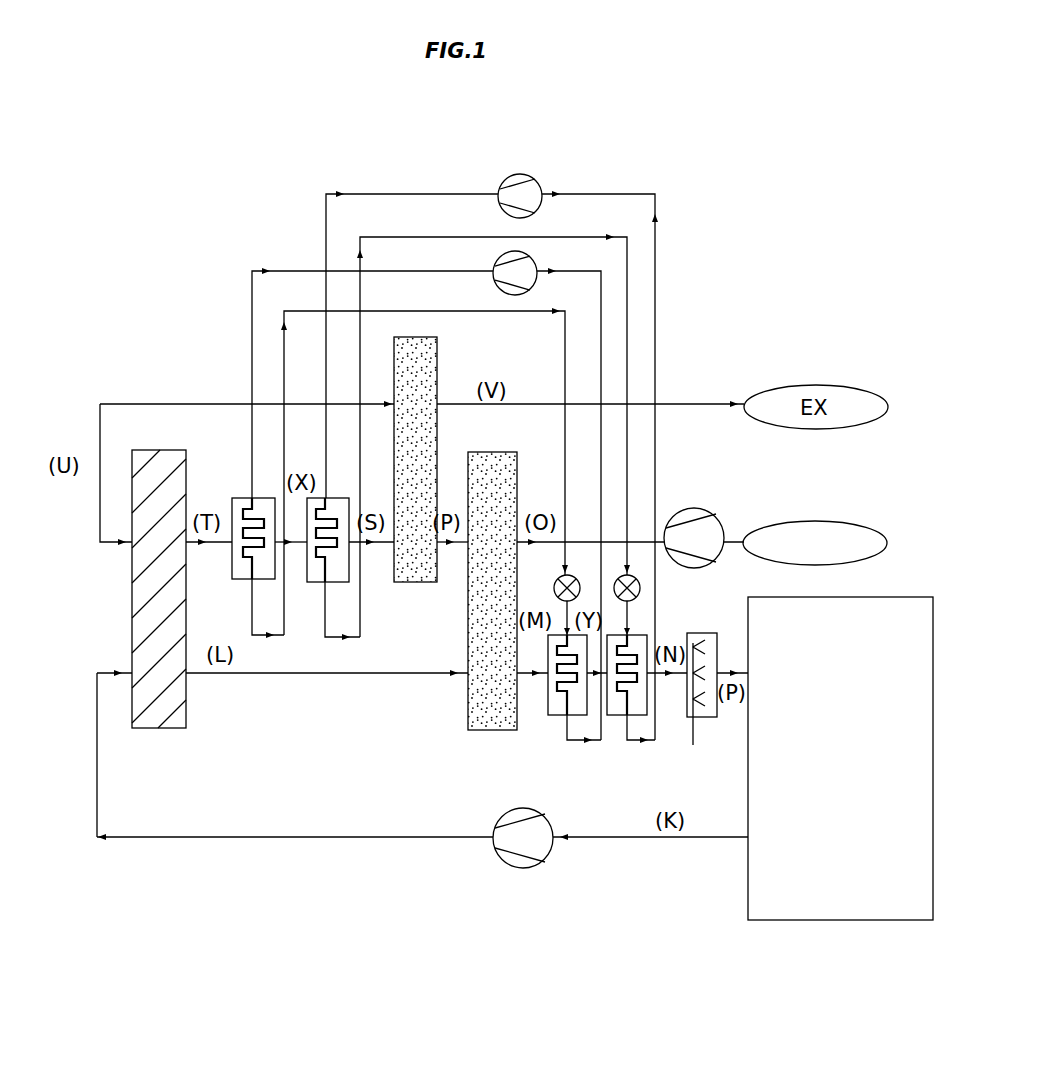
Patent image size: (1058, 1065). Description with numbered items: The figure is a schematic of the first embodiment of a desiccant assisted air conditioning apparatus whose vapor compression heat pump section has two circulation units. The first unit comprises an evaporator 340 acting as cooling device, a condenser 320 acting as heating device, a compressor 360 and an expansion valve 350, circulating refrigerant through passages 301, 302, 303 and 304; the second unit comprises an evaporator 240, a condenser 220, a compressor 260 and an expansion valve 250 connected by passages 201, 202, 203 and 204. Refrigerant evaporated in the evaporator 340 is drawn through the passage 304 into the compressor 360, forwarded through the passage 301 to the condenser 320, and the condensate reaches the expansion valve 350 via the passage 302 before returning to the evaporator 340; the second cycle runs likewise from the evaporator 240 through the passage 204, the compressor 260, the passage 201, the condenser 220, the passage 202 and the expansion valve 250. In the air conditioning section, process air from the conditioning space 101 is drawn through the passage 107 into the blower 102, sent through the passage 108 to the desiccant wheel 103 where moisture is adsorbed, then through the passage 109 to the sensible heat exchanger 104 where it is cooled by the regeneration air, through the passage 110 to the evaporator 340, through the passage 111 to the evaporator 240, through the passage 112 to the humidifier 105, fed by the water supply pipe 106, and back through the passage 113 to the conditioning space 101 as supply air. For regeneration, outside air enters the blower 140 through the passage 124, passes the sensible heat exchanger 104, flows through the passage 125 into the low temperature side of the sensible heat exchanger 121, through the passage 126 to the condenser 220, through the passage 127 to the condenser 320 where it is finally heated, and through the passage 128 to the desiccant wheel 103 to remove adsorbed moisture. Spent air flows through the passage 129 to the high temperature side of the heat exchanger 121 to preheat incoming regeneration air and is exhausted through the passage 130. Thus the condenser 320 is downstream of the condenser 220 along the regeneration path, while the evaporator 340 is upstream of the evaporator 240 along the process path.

The conditioning space 101 is at (905, 597).
The blower 102 is at (503, 818).
The desiccant wheel 103 is at (132, 625).
The sensible heat exchanger 104 is at (468, 722).
The humidifier 105 is at (703, 633).
The water supply pipe 106 is at (696, 740).
The air passage 107 is at (622, 840).
The air passage 108 is at (272, 840).
The air passage 109 is at (330, 676).
The air passage 110 is at (540, 690).
The air passage 111 is at (603, 735).
The air passage 112 is at (660, 690).
The air passage 113 is at (728, 668).
The sensible heat exchanger 121 is at (437, 348).
The air passage 124 is at (745, 525).
The air passage 125 is at (448, 548).
The air passage 126 is at (375, 548).
The air passage 127 is at (290, 548).
The air passage 128 is at (210, 548).
The air passage 129 is at (100, 542).
The air passage 130 is at (540, 404).
The blower 140 is at (704, 508).
The refrigerant passage 201 is at (326, 206).
The refrigerant passage 202 is at (352, 640).
The refrigerant passage 203 is at (628, 612).
The refrigerant passage 204 is at (656, 236).
The condenser 220 is at (325, 498).
The evaporator 240 is at (617, 720).
The expansion valve 250 is at (632, 600).
The compressor 260 is at (506, 178).
The refrigerant passage 301 is at (252, 290).
The refrigerant passage 302 is at (258, 640).
The refrigerant passage 303 is at (578, 600).
The refrigerant passage 304 is at (600, 328).
The condenser 320 is at (238, 498).
The evaporator 340 is at (560, 720).
The expansion valve 350 is at (565, 575).
The compressor 360 is at (495, 288).